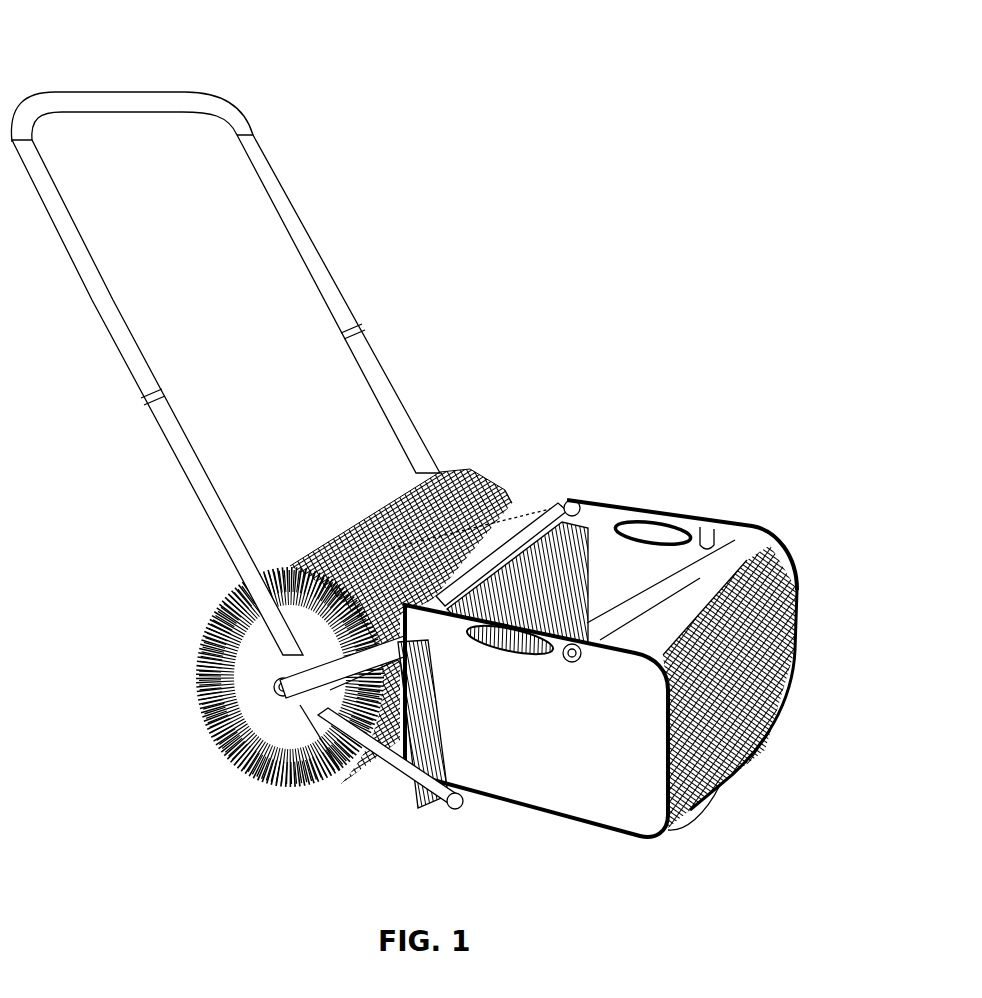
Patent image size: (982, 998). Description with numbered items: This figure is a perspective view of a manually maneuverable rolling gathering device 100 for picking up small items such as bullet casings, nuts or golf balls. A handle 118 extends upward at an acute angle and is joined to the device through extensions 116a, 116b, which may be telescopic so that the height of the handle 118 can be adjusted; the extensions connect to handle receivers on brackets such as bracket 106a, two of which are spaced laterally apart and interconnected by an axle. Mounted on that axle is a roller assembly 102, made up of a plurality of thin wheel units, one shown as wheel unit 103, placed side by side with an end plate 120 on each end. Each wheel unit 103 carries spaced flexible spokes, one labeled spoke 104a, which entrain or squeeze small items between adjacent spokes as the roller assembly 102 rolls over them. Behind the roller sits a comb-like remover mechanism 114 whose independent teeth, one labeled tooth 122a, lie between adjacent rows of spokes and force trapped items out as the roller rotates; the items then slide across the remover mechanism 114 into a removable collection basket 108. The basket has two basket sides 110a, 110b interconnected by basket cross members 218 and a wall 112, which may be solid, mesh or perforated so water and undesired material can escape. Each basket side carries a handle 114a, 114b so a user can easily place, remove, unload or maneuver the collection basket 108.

The gathering device 100 is at (565, 252).
The roller assembly 102 is at (218, 743).
The wheel unit 103 is at (206, 590).
The spoke 104a is at (220, 697).
The bracket 106a is at (406, 778).
The collection basket 108 is at (753, 512).
The basket side 110a is at (610, 803).
The basket side 110b is at (793, 576).
The wall 112 is at (733, 734).
The remover mechanism 114 is at (530, 555).
The handle 114a is at (516, 650).
The handle 114b is at (636, 532).
The extension 116a is at (155, 394).
The extension 116b is at (364, 385).
The handle 118 is at (129, 92).
The end plate 120 is at (250, 662).
The tooth 122a is at (343, 617).
The basket cross member 218 is at (563, 503).